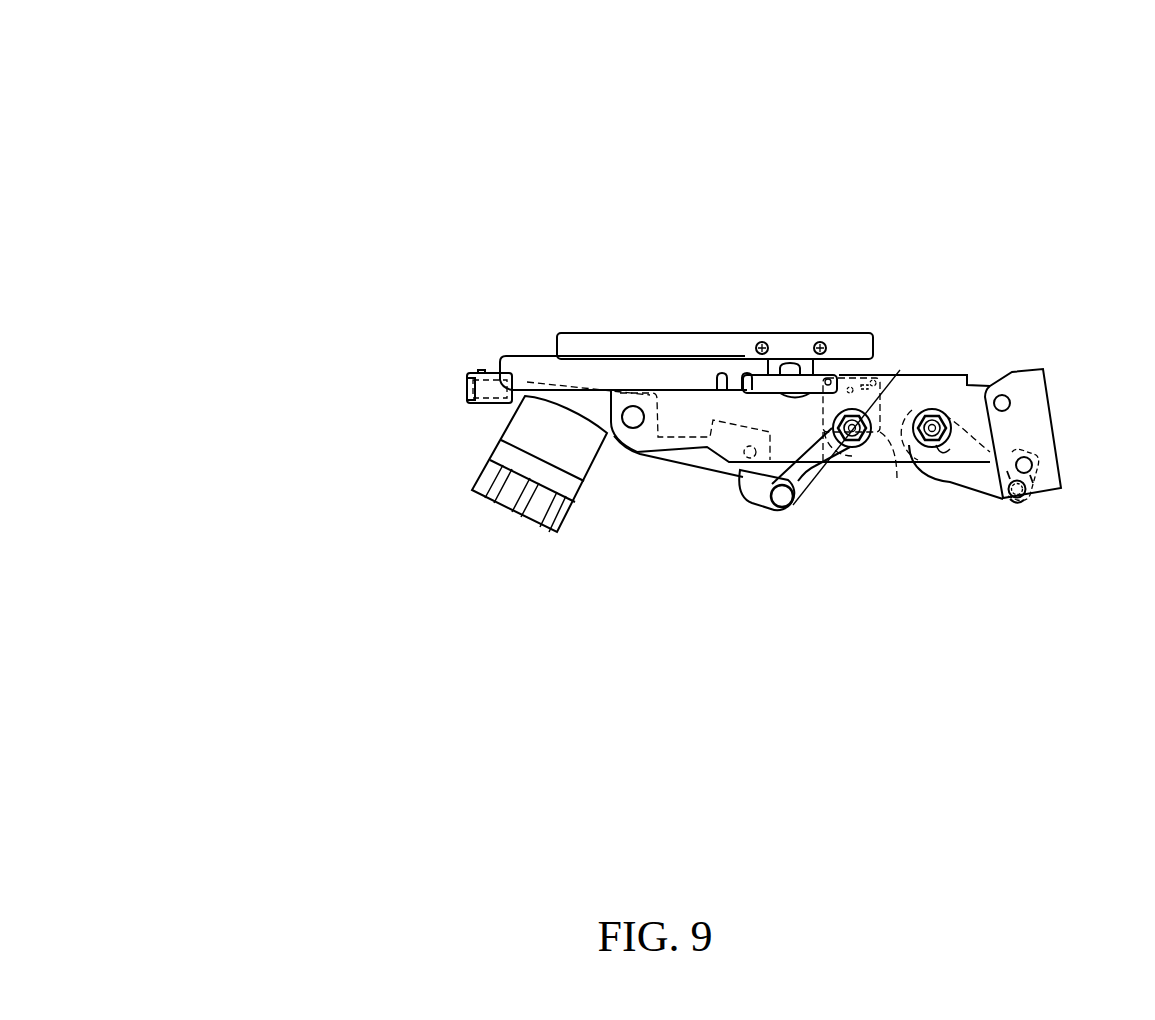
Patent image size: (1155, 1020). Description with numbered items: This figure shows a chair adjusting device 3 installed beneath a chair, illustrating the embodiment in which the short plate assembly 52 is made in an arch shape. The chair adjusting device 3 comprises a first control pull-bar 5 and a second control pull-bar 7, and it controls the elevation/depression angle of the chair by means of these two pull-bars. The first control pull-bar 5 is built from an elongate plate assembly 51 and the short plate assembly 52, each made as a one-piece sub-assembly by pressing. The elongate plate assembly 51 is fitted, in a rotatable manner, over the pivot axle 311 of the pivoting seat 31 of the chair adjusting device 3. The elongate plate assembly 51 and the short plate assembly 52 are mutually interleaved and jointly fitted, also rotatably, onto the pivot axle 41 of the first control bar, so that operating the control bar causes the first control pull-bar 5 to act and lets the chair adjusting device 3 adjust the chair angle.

The chair adjusting device 3 is at (1045, 525).
The pivoting seat 31 is at (753, 495).
The pivot axle 311 is at (787, 500).
The pivot axle 41 is at (900, 370).
The first control pull-bar 5 is at (853, 480).
The elongate plate assembly 51 is at (820, 483).
The short plate assembly 52 is at (897, 460).
The second control pull-bar 7 is at (977, 483).